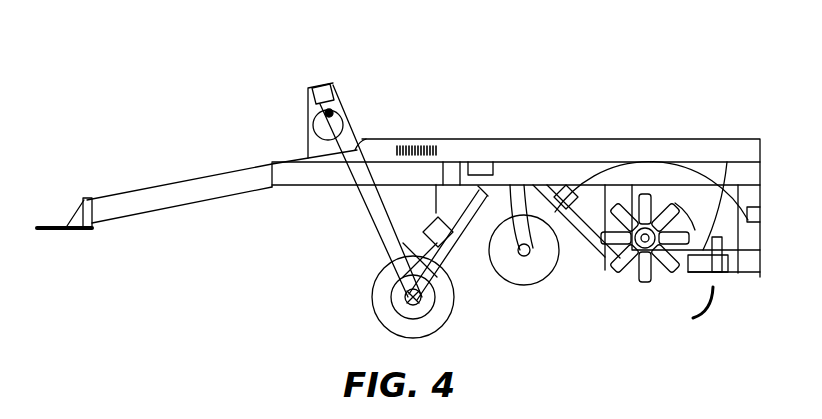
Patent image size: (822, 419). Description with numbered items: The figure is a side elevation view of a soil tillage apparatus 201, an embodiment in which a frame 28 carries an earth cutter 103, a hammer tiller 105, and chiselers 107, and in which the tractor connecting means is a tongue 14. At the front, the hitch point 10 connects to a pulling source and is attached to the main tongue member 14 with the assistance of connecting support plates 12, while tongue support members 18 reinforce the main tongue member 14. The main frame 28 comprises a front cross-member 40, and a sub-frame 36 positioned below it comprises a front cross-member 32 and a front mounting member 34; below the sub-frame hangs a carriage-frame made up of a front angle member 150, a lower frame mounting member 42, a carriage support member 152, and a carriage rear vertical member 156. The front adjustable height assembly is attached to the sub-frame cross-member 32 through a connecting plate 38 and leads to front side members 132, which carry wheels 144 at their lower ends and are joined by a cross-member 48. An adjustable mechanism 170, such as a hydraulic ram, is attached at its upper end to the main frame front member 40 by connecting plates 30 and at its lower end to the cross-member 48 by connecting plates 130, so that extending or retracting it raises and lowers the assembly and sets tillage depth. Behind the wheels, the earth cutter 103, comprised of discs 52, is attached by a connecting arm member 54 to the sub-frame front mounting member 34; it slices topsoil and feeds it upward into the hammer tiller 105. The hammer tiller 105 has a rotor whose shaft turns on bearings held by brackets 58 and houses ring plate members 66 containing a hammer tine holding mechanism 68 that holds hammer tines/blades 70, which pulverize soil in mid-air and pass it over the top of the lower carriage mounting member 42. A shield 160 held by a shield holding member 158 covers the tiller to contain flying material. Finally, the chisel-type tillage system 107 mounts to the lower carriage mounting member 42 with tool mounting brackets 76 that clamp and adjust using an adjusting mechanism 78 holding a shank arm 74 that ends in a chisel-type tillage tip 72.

The soil tillage apparatus 201 is at (606, 79).
The hitch point 10 is at (45, 220).
The connecting support plates 12 is at (86, 197).
The main tongue member 14 is at (130, 214).
The tongue support members 18 is at (287, 186).
The front cross-member 40 is at (307, 90).
The connecting plates 30 is at (352, 120).
The adjustable mechanism 170 is at (377, 220).
The main frame 28 is at (428, 138).
The front cross-member 32 is at (451, 162).
The front mounting member 34 is at (482, 162).
The sub-frame 36 is at (450, 200).
The connecting plates 130 is at (452, 258).
The front side members 132 is at (433, 216).
The cross-member 48 is at (458, 231).
The wheels 144 is at (385, 303).
The connecting plate 38 is at (588, 162).
The discs 52 is at (519, 286).
The earth cutter 103 is at (525, 306).
The connecting arm member 54 is at (516, 160).
The front angle member 150 is at (566, 253).
The shield holding member 158 is at (560, 185).
The brackets 58 is at (648, 165).
The carriage support member 152 is at (613, 162).
The shield 160 is at (691, 140).
The tool mounting brackets 76 is at (727, 140).
The hammer tines/blades 70 is at (644, 283).
The ring plate members 66 is at (630, 272).
The hammer tine holding mechanism 68 is at (690, 270).
The lower frame mounting member 42 is at (713, 272).
The shank arm 74 is at (722, 284).
The carriage rear vertical member 156 is at (753, 275).
The adjusting mechanism 78 is at (758, 252).
The chisel-type tillage tip 72 is at (700, 321).
The hammer tiller 105 is at (620, 318).
The chisel-type tillage system 107 is at (692, 333).